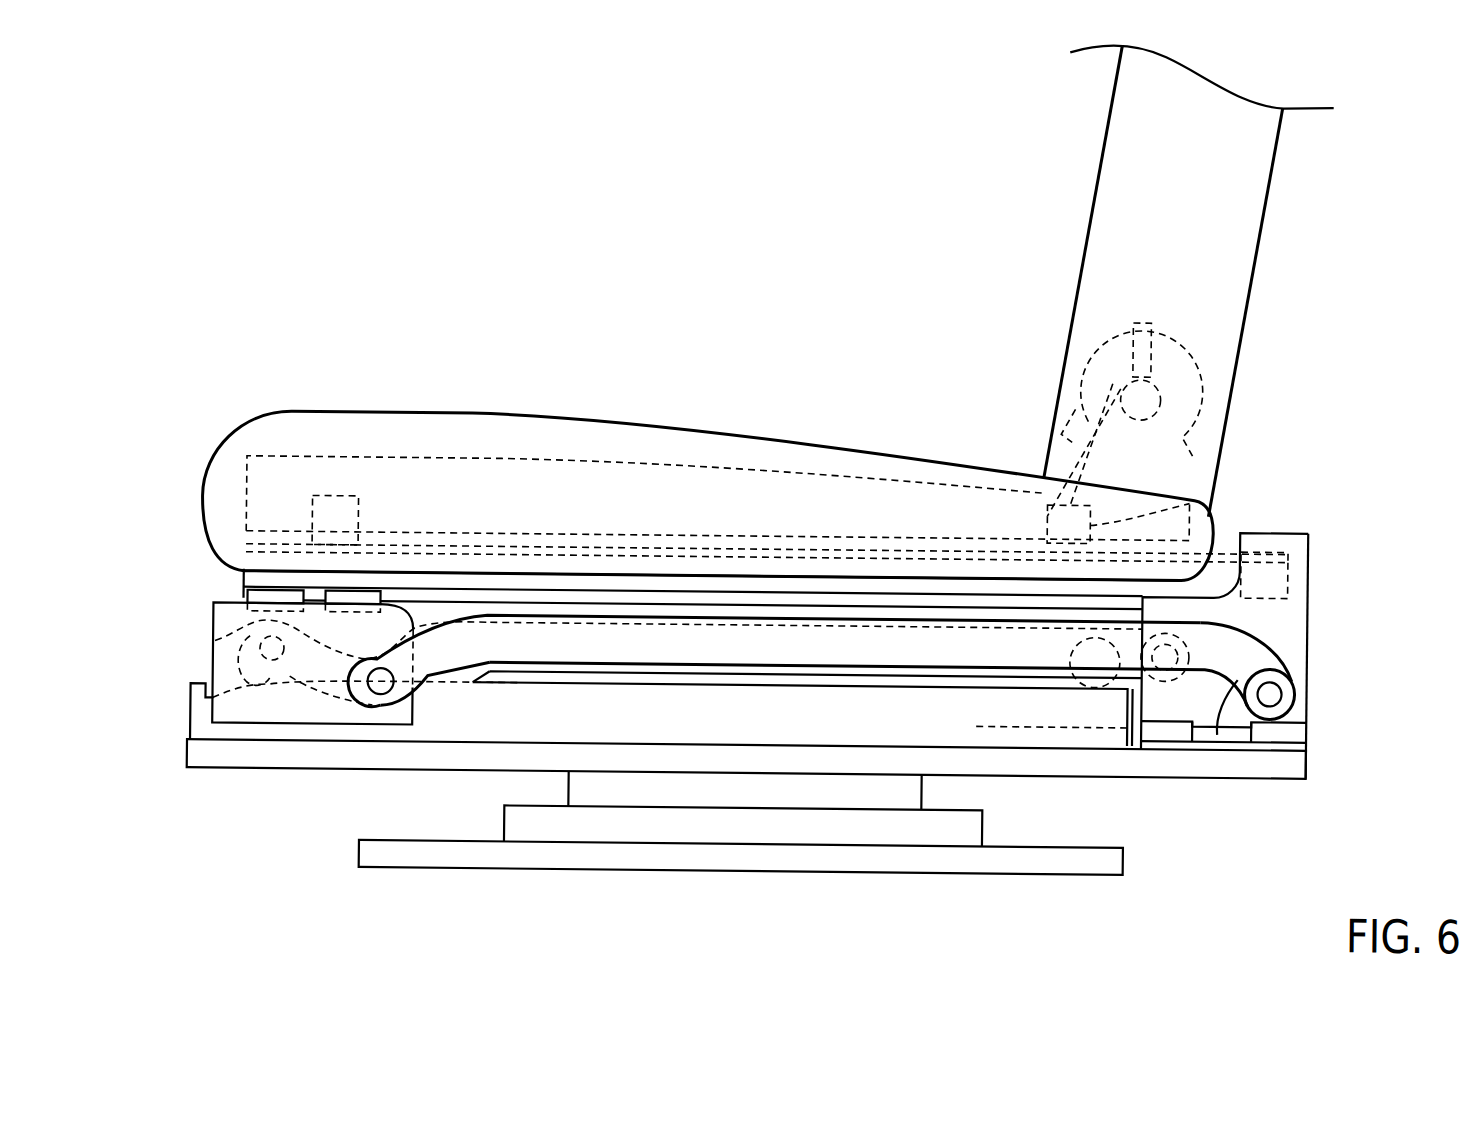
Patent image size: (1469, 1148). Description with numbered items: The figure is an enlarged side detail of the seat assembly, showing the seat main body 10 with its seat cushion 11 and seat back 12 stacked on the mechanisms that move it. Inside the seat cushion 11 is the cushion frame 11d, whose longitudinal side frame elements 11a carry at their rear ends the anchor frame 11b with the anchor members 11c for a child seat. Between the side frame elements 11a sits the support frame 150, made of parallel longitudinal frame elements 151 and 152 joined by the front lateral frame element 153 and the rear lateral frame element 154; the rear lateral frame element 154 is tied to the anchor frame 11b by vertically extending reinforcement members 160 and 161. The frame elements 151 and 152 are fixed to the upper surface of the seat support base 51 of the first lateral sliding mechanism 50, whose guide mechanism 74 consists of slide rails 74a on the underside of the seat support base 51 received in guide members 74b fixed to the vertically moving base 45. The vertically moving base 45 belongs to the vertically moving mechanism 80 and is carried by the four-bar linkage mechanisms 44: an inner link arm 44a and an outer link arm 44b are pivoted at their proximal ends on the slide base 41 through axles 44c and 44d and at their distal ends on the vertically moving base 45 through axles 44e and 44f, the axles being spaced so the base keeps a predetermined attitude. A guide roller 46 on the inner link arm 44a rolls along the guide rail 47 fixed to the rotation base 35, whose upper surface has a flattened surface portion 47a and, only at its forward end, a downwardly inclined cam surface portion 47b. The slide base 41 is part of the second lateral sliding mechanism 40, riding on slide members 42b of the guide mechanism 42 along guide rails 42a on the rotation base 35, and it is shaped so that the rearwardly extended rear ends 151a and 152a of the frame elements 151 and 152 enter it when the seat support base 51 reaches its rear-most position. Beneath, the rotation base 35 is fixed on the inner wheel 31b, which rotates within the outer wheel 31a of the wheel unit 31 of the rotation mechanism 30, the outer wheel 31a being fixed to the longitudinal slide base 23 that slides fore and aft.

The seat main body 10 is at (695, 365).
The seat cushion 11 is at (410, 403).
The side frame elements 11a is at (718, 419).
The anchor frame 11b is at (1158, 400).
The anchor members 11c is at (1145, 353).
The cushion frame 11d is at (473, 486).
The seat back 12 is at (1128, 214).
The longitudinal slide base 23 is at (569, 853).
The rotation mechanism 30 is at (908, 817).
The rail 31 is at (875, 817).
The outer wheel 31a is at (965, 832).
The inner wheel 31b is at (900, 788).
The rotation base 35 is at (206, 757).
The second lateral sliding mechanism 40 is at (1376, 657).
The slide base 41 is at (1270, 621).
The guide mechanism 42 is at (1312, 726).
The guide rails 42a is at (1296, 662).
The slide members 42b is at (1172, 727).
The four-bar linkage mechanisms 44 is at (742, 647).
The inner link arm 44a is at (430, 692).
The outer link arm 44b is at (785, 649).
The axle 44c is at (1165, 650).
The axle 44d is at (1283, 688).
The axle 44e is at (268, 653).
The axle 44f is at (380, 690).
The vertically moving base 45 is at (232, 622).
The guide rollers 46 is at (1080, 681).
The guide rails 47 is at (845, 712).
The flattened surface portion 47a is at (683, 684).
The downwardly inclined cam surface portion 47b is at (256, 695).
The first lateral sliding mechanism 50 is at (232, 592).
The seat support base 51 is at (692, 580).
The guide mechanism 74 is at (723, 485).
The slide rails 74a is at (565, 591).
The guide members 74b is at (263, 598).
The vertically moving mechanism 80 is at (1333, 470).
The support frame 150 is at (837, 569).
The longitudinal frame element 151 is at (278, 551).
The longitudinal frame element 152 is at (766, 457).
The rear end 151a is at (1270, 574).
The rear end 152a is at (1330, 544).
The front lateral frame element 153 is at (343, 520).
The rear lateral frame element 154 is at (1187, 498).
The reinforcement member 160 is at (1058, 396).
The reinforcement member 161 is at (1066, 393).